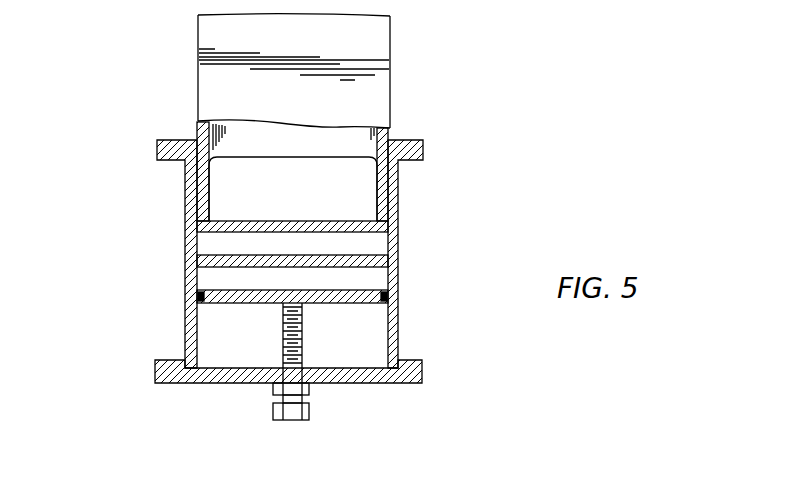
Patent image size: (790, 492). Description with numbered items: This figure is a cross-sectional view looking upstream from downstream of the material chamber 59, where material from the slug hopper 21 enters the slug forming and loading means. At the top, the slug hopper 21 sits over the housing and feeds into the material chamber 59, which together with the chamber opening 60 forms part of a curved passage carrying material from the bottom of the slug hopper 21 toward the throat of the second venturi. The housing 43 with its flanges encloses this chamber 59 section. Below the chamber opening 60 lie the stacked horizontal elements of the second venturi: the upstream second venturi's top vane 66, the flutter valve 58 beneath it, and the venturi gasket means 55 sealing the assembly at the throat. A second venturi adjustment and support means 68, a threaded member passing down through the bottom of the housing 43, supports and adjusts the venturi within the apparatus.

The slug hopper 21 is at (390, 83).
The housing with flanges 43 is at (411, 141).
The material chamber 59 is at (360, 203).
The chamber opening 60 is at (238, 187).
The upstream second venturi's top vane 66 is at (357, 229).
The flutter valve 58 is at (375, 268).
The venturi gasket means 55 is at (387, 296).
The second venturi adjustment and support means 68 is at (304, 344).